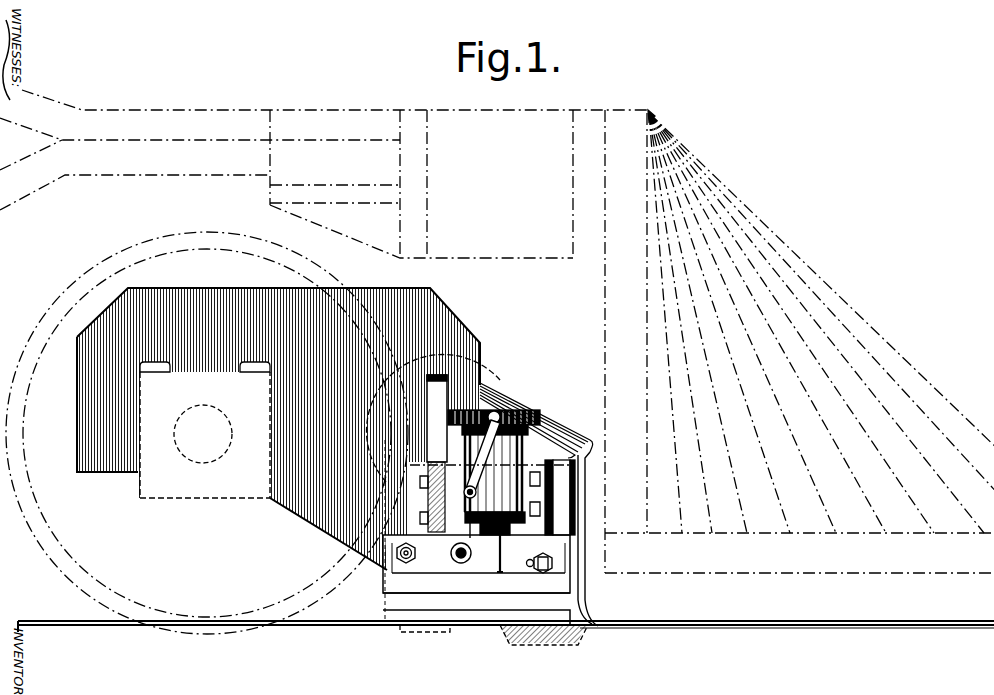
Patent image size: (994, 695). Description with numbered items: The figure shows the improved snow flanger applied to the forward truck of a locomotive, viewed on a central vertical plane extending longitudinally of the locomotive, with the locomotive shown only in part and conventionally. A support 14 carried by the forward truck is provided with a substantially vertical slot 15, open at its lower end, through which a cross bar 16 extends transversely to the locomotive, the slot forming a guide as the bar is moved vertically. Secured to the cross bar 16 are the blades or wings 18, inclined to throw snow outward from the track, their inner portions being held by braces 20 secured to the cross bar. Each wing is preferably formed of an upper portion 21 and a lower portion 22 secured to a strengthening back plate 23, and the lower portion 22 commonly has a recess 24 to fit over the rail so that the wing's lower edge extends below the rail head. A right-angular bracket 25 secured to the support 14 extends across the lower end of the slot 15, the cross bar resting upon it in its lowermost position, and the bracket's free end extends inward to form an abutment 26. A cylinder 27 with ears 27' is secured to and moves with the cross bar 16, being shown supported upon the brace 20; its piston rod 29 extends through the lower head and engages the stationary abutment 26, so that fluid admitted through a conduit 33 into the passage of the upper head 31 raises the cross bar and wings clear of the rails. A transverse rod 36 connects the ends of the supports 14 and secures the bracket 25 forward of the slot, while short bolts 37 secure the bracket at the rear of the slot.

The supports 14 is at (443, 310).
The slot 15 is at (437, 392).
The cross bar 16 is at (428, 500).
The blades or wings 18 is at (596, 539).
The braces 20 is at (537, 468).
The upper portion of wing 21 is at (583, 463).
The lower portion of wing 22 is at (587, 610).
The strengthening back plate 23 is at (565, 510).
The recess 24 is at (472, 618).
The brackets 25 is at (458, 528).
The abutments 26 is at (510, 565).
The cylinders 27 is at (495, 477).
The ears 27' is at (449, 546).
The piston rod 29 is at (505, 544).
The upper heads of cylinders 31 is at (521, 410).
The conduits 33 is at (492, 406).
The transverse rod 36 is at (465, 563).
The short bolts 37 is at (383, 568).